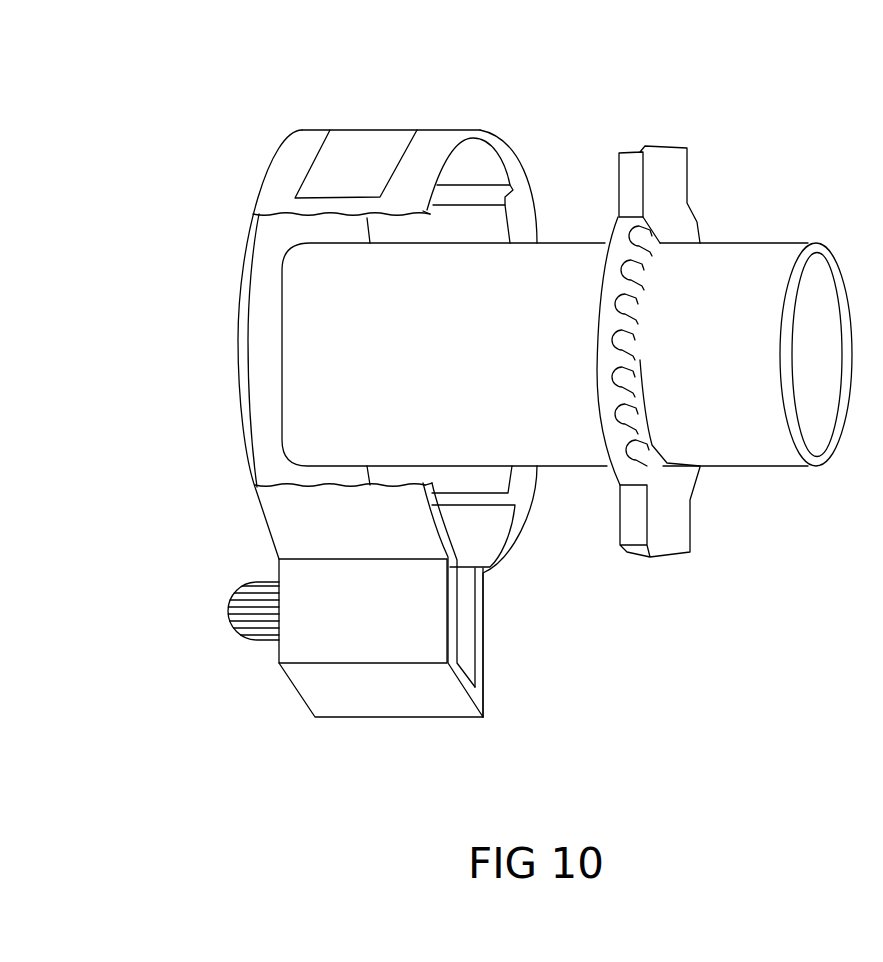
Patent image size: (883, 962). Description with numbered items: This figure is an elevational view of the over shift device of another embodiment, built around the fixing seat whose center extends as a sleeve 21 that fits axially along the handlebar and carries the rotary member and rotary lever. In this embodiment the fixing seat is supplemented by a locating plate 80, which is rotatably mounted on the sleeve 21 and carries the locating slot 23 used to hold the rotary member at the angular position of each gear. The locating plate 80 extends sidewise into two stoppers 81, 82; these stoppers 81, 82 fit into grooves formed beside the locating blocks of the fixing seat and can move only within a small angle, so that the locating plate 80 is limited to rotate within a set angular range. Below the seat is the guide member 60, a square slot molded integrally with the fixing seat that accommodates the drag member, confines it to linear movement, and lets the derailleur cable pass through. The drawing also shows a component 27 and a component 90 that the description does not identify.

The sleeve 21 is at (765, 242).
The locating slot 23 is at (622, 388).
The collar band 27 is at (350, 157).
The guide member 60 is at (367, 630).
The locating plate 80 is at (692, 203).
The stopper 81 is at (670, 172).
The stopper 82 is at (668, 528).
The adjustment knob 90 is at (253, 620).